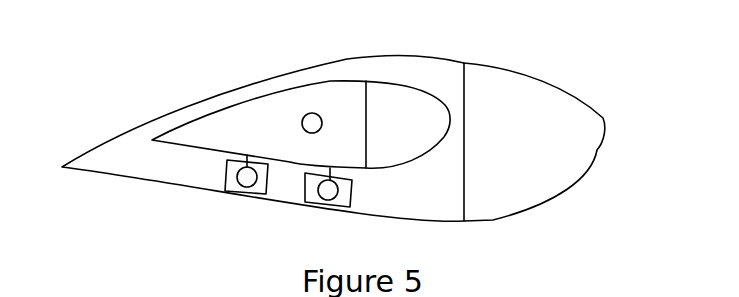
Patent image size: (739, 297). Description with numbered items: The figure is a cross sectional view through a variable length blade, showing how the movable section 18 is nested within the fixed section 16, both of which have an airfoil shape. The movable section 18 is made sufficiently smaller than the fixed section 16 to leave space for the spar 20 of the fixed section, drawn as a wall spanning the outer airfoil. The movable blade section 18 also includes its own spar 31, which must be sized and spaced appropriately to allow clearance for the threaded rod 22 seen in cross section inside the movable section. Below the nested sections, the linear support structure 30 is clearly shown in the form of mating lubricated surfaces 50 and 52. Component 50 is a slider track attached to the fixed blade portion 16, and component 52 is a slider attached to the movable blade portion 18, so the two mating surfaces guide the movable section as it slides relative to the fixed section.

The fixed section 16 is at (553, 80).
The movable section 18 is at (302, 83).
The spar 20 is at (464, 143).
The threaded rod 22 is at (302, 126).
The linear support structure 30 is at (222, 198).
The spar 31 is at (366, 120).
The slider track 50 is at (226, 172).
The slider 52 is at (248, 187).